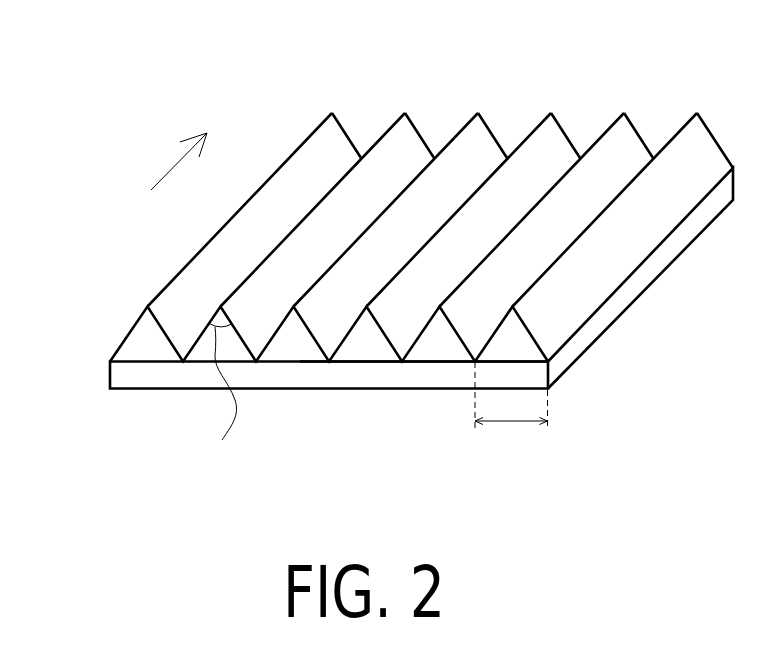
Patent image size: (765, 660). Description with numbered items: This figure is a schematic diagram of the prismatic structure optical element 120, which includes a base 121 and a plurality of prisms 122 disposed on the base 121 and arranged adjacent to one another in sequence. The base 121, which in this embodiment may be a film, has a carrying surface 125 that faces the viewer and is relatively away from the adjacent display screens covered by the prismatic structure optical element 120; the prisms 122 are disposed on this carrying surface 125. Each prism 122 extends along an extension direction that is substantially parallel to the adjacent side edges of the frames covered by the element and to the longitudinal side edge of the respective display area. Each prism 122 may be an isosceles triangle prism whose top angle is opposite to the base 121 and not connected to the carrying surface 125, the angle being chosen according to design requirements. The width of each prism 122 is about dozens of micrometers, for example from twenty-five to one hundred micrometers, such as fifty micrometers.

The prismatic structure optical element 120 is at (114, 60).
The base 121 is at (150, 373).
The prism 122 is at (143, 338).
The carrying surface 125 is at (435, 390).